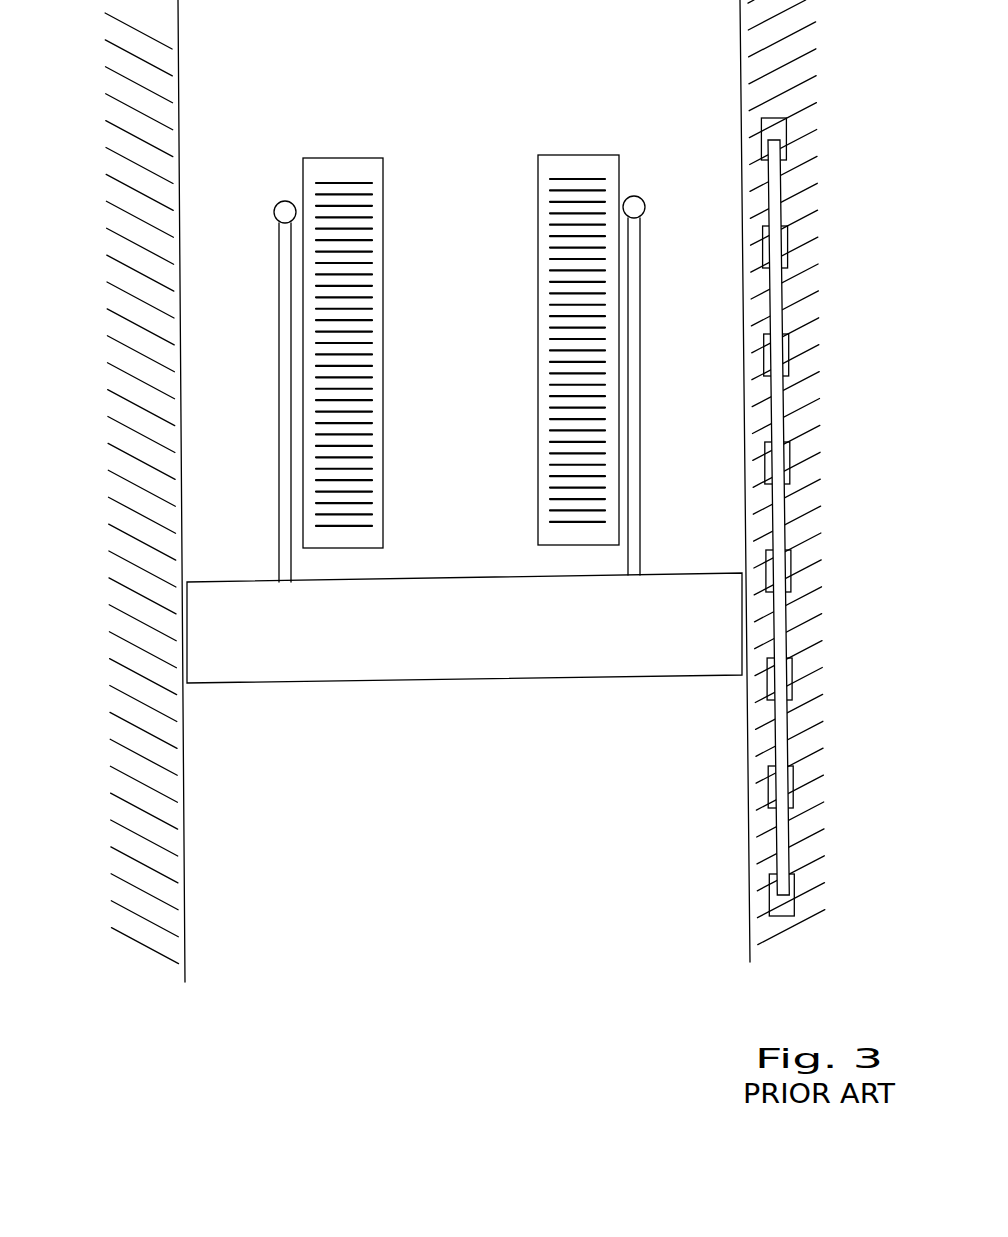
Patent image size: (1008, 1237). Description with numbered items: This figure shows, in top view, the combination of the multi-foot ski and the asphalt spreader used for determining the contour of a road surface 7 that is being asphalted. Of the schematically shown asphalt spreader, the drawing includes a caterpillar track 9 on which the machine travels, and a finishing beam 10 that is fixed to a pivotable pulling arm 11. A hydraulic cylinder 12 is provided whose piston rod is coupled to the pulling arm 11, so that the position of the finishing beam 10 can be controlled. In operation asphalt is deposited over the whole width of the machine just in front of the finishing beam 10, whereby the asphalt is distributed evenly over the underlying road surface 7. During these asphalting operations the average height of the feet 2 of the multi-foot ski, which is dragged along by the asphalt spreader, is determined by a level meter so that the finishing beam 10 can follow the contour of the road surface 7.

The feet 2 is at (789, 142).
The road surface 7 is at (207, 347).
The caterpillar track 9 is at (383, 256).
The finishing beam 10 is at (450, 635).
The pulling arm 11 is at (280, 253).
The hydraulic cylinder 12 is at (282, 195).